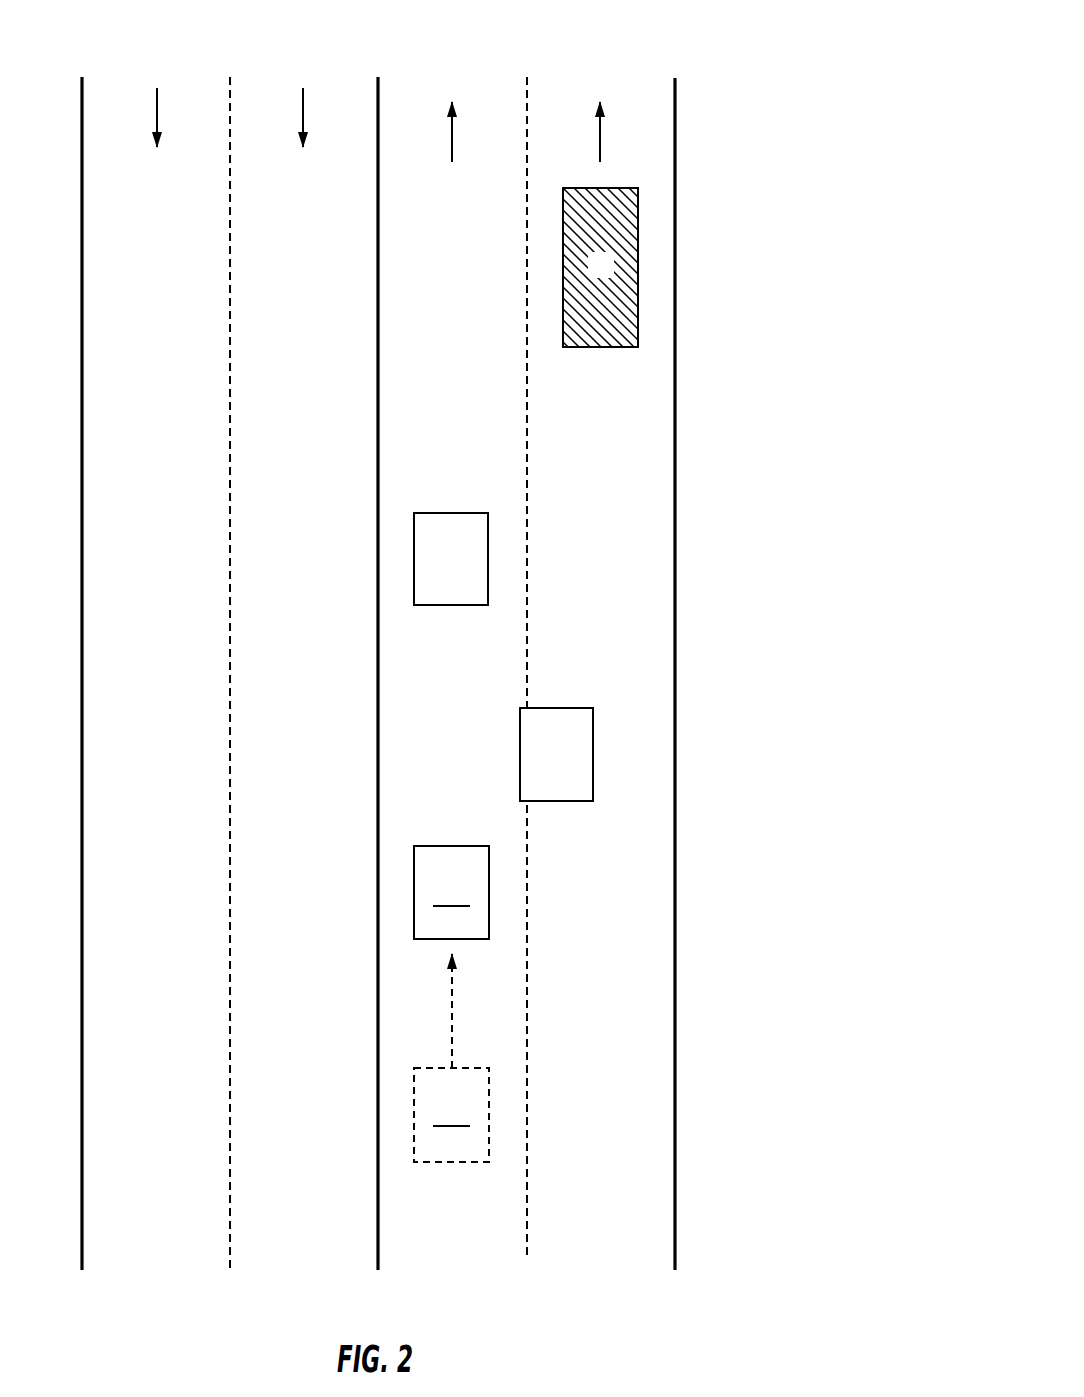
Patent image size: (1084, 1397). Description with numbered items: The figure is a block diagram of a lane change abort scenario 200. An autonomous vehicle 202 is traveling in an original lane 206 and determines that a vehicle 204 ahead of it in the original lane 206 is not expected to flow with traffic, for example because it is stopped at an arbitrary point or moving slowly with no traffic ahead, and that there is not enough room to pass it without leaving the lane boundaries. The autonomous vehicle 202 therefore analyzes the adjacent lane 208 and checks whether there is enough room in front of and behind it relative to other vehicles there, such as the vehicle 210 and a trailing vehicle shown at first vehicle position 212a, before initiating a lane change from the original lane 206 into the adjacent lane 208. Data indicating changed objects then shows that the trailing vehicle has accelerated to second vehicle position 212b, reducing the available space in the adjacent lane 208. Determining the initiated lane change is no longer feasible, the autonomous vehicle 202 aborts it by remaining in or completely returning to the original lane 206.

The lane change abort scenario 200 is at (722, 38).
The autonomous vehicle 202 is at (520, 762).
The vehicle 204 is at (563, 277).
The original lane 206 is at (597, 1253).
The adjacent lane 208 is at (443, 1253).
The vehicle 210 is at (414, 558).
The first vehicle position 212a is at (414, 1118).
The second vehicle position 212b is at (414, 897).